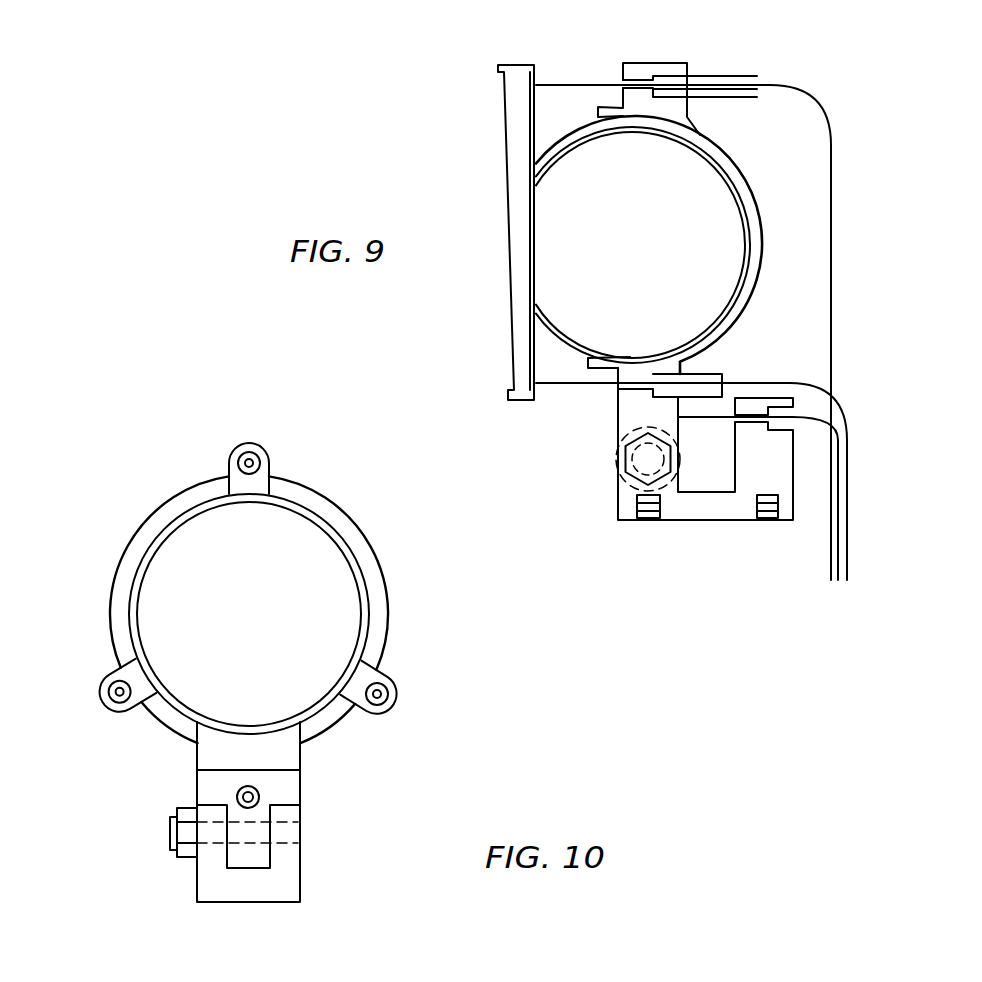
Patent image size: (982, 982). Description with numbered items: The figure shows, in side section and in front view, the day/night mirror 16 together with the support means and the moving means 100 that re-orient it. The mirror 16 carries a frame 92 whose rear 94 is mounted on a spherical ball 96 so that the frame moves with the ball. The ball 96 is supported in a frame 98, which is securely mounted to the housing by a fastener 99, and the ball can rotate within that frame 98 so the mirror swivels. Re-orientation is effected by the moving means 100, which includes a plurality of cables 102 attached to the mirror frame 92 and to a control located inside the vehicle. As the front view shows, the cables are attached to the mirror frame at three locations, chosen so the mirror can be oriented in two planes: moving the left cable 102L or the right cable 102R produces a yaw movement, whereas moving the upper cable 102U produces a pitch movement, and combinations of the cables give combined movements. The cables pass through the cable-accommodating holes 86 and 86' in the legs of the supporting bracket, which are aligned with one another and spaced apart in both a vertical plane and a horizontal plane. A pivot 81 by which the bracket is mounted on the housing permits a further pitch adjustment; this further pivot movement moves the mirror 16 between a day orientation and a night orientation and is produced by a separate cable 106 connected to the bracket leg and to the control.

In FIG. 9, the day/night mirror 16 is at (512, 362).
In FIG. 9, the pivot 81 is at (625, 460).
In FIG. 10, the pivot 81 is at (157, 833).
In FIG. 9, the cable-accommodating hole 86 is at (771, 378).
In FIG. 9, the cable-accommodating hole 86' is at (702, 349).
In FIG. 10, the cable-accommodating hole 86' is at (75, 665).
In FIG. 9, the frame 92 is at (513, 65).
In FIG. 9, the rear 94 is at (535, 342).
In FIG. 9, the spherical ball 96 is at (578, 128).
In FIG. 9, the frame 98 is at (702, 137).
In FIG. 9, the fastener 99 is at (647, 63).
In FIG. 9, the moving means 100 is at (755, 200).
In FIG. 10, the moving means 100 is at (172, 498).
In FIG. 9, the cables 102 is at (785, 89).
In FIG. 10, the upper cable 102U is at (253, 463).
In FIG. 10, the left cable 102L is at (118, 695).
In FIG. 10, the right cable 102R is at (383, 697).
In FIG. 9, the cable 106 is at (813, 423).